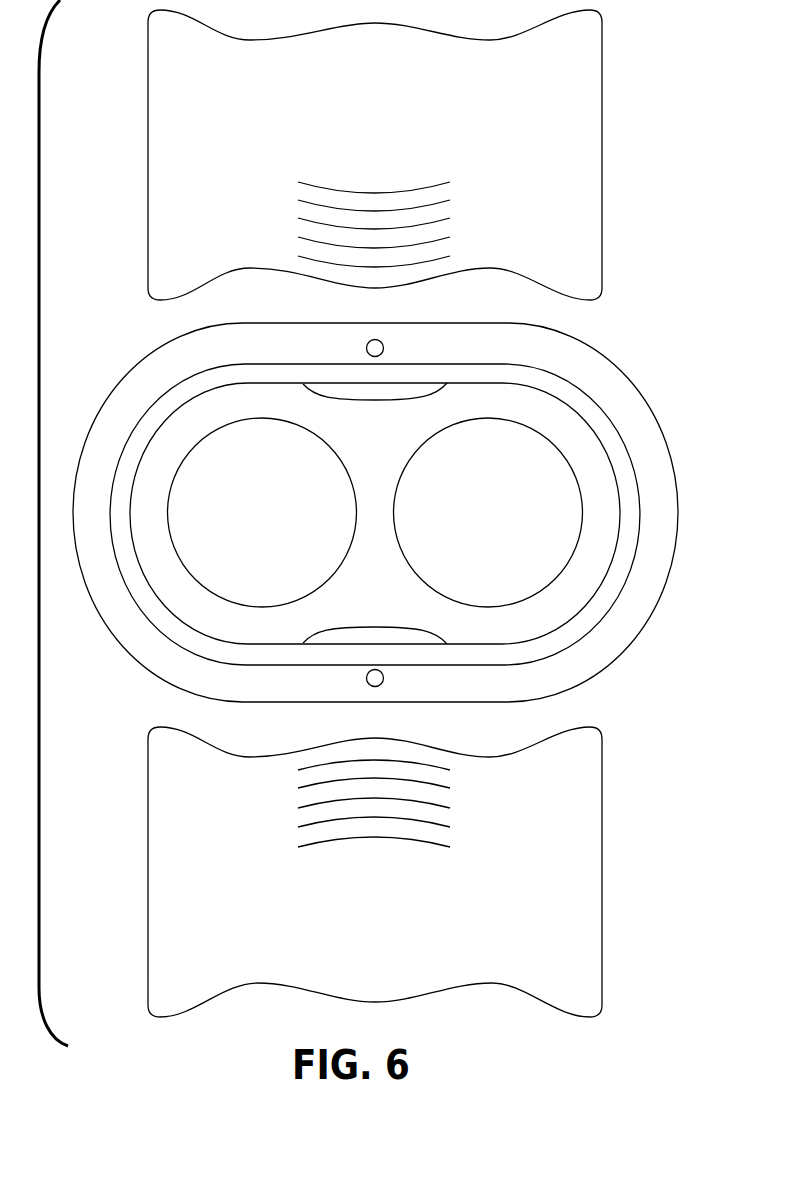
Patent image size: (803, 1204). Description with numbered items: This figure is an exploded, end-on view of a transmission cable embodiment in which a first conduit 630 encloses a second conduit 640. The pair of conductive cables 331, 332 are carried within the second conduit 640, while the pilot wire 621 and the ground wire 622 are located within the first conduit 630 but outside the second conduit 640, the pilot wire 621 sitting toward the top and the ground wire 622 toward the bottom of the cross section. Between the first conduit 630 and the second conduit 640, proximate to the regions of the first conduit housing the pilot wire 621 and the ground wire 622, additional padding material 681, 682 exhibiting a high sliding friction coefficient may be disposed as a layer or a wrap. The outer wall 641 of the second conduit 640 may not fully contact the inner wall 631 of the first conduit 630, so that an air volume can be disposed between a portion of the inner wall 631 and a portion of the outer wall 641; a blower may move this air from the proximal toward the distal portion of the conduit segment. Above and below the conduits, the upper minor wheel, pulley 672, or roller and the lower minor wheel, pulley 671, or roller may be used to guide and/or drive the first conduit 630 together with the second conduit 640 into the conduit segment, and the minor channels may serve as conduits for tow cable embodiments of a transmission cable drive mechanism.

The upper minor wheel, pulley, or roller 672 is at (603, 131).
The lower minor wheel, pulley, or roller 671 is at (602, 857).
The first conduit 630 is at (668, 448).
The second conduit 640 is at (615, 553).
The outer wall of the second conduit 641 is at (163, 424).
The inner wall of the first conduit 631 is at (609, 422).
The conductive cable 331 is at (262, 512).
The conductive cable 332 is at (488, 512).
The pilot wire 621 is at (384, 348).
The ground wire 622 is at (366, 679).
The padding material 681 is at (330, 388).
The padding material 682 is at (404, 637).